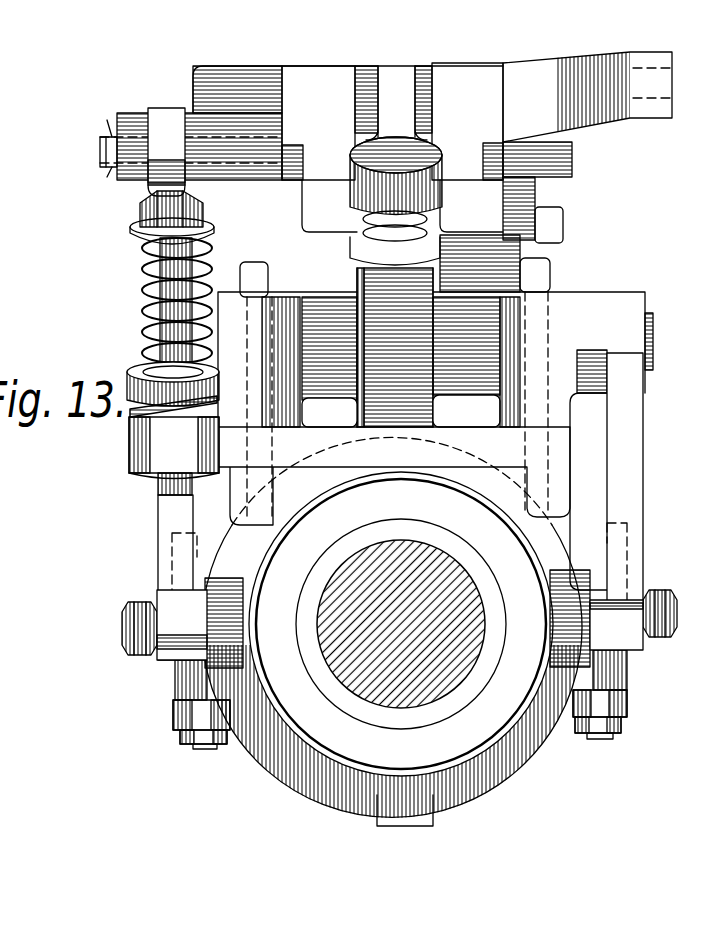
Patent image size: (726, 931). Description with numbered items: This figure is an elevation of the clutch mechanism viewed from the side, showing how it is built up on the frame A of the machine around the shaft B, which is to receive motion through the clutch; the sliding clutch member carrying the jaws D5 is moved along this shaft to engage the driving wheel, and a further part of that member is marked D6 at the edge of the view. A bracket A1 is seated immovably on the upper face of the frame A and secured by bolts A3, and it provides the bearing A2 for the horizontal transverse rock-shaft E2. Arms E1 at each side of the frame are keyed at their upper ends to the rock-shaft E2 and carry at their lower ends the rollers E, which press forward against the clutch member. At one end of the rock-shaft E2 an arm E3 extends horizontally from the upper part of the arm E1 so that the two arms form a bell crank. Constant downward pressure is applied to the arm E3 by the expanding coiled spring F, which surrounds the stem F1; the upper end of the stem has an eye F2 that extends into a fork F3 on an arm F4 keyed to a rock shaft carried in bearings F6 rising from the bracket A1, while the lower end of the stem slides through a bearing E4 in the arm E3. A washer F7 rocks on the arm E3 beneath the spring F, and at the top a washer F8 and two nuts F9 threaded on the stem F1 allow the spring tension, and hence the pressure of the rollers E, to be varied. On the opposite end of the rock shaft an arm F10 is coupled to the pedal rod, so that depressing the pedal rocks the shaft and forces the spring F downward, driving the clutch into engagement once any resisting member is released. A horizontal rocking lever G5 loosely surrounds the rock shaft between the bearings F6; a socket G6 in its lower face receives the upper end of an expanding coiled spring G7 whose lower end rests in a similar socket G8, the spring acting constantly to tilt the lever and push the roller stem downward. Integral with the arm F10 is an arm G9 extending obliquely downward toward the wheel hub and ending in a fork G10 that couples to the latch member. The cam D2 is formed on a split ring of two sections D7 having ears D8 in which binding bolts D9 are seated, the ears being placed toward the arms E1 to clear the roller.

The frame A is at (394, 476).
The bracket A1 is at (392, 480).
The bearing A2 is at (567, 330).
The bolts A3 is at (257, 270).
The shaft B is at (367, 685).
The cam D2 is at (525, 762).
The jaws D5 is at (0, 258).
The member D6 is at (15, 322).
The ring sections D7 is at (267, 758).
The ears D8 is at (190, 678).
The binding bolts D9 is at (200, 750).
The rollers E is at (122, 625).
The arms E1 is at (160, 520).
The rock-shaft E2 is at (652, 338).
The arm E3 is at (130, 440).
The bearing E4 is at (133, 470).
The spring F is at (127, 263).
The stem F1 is at (143, 298).
The eye F2 is at (138, 181).
The fork F3 is at (140, 147).
The arm F4 is at (180, 113).
The bearings F6 is at (282, 121).
The washer F7 is at (140, 362).
The washer F8 is at (140, 238).
The nuts F9 is at (140, 212).
The arm F10 is at (606, 118).
The rocking lever G5 is at (368, 72).
The socket G6 is at (380, 165).
The spring G7 is at (370, 231).
The socket G8 is at (360, 270).
The arm G9 is at (536, 188).
The fork G10 is at (550, 247).